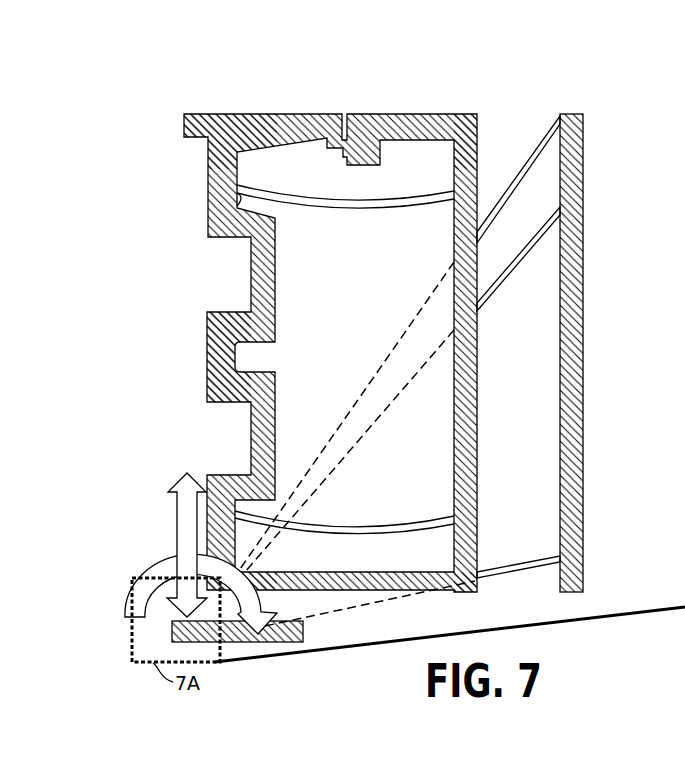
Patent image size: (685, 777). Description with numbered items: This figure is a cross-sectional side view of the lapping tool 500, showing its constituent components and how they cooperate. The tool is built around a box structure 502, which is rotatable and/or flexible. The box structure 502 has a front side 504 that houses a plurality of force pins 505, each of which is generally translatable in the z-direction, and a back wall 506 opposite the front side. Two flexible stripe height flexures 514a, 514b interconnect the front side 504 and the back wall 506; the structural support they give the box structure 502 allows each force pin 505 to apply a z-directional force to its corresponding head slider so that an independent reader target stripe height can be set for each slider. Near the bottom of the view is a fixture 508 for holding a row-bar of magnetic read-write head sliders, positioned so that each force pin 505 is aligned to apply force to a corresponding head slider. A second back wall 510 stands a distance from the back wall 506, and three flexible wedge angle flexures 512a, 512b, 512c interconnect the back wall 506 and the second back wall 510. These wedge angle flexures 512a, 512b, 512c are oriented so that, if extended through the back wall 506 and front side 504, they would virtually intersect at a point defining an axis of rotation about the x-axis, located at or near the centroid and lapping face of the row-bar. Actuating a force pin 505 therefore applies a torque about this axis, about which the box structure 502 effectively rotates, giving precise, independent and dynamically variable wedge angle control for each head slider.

The lapping tool 500 is at (226, 72).
The box structure 502 is at (398, 113).
The front side 504 is at (172, 238).
The force pins 505 is at (207, 360).
The back wall 506 is at (481, 137).
The fixture 508 is at (172, 633).
The second back wall 510 is at (585, 404).
The wedge angle flexure 512a is at (521, 160).
The wedge angle flexure 512b is at (532, 252).
The wedge angle flexure 512c is at (538, 561).
The stripe height flexure 514a is at (318, 207).
The stripe height flexure 514b is at (317, 525).